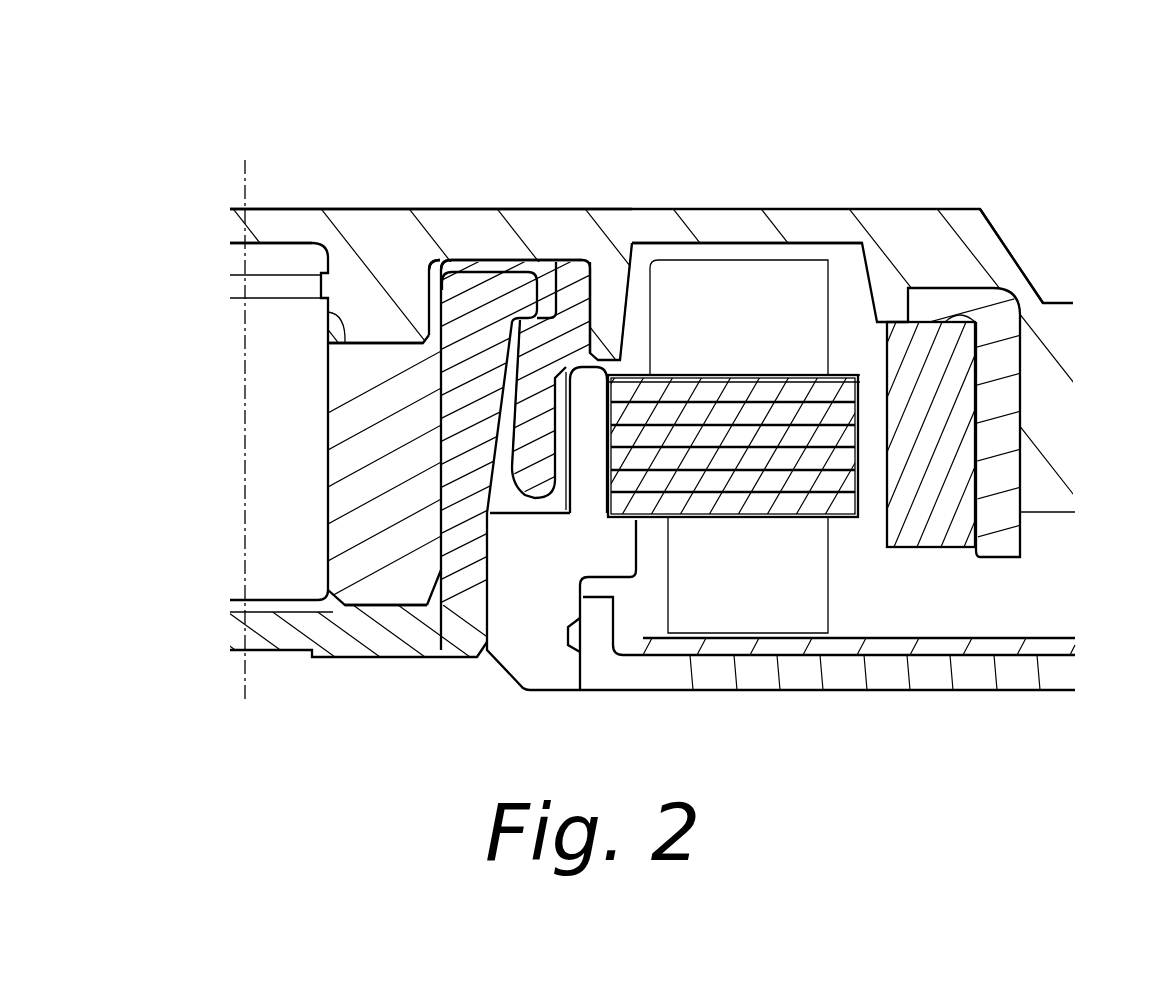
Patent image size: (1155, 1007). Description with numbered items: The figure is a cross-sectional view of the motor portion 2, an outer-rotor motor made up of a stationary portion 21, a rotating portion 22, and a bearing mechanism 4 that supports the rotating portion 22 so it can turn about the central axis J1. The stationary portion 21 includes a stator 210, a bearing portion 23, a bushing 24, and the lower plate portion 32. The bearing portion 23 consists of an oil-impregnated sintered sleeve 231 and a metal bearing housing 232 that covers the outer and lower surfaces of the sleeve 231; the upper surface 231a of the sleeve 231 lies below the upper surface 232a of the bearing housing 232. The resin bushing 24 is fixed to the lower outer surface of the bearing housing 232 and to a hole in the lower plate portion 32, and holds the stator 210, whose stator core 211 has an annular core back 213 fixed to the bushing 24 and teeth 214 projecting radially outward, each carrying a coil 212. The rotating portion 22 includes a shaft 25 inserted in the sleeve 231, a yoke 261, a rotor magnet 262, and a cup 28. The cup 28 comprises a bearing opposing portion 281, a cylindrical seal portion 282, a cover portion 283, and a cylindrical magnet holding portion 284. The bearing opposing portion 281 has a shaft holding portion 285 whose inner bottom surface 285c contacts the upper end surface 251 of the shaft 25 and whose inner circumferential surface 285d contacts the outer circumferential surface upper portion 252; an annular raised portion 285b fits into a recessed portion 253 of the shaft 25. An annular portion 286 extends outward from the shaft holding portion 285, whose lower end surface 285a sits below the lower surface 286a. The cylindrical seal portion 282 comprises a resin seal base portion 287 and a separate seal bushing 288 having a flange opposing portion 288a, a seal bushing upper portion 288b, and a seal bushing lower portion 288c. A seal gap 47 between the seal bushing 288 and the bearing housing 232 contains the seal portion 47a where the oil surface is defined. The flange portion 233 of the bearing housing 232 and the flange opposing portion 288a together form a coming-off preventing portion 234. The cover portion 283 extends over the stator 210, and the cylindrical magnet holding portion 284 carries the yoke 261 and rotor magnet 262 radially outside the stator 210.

The motor portion 2 is at (296, 118).
The cup 28 is at (418, 106).
The central axis J1 is at (243, 185).
The upper end surface 251 is at (268, 240).
The inner bottom surface 285c is at (322, 285).
The recessed portion 253 is at (322, 297).
The inner circumferential surface 285d is at (330, 318).
The outer circumferential surface upper portion 252 is at (340, 350).
The lower end surface 285a is at (430, 360).
The lower surface 286a is at (447, 395).
The seal portion 47a is at (455, 428).
The seal gap 47 is at (447, 470).
The shaft 25 is at (280, 585).
The sleeve 231 is at (405, 573).
The upper surface 231a is at (400, 298).
The raised portion 285b is at (372, 342).
The shaft holding portion 285 is at (400, 290).
The annular portion 286 is at (471, 262).
The bearing opposing portion 281 is at (485, 128).
The bearing housing 232 is at (465, 573).
The upper surface 232a is at (494, 264).
The flange portion 233 is at (540, 320).
The coming-off preventing portion 234 is at (590, 107).
The seal bushing 288 is at (612, 138).
The flange opposing portion 288a is at (590, 300).
The seal bushing upper portion 288b is at (627, 340).
The seal bushing lower portion 288c is at (535, 440).
The seal base portion 287 is at (635, 305).
The cylindrical seal portion 282 is at (703, 117).
The cover portion 283 is at (751, 234).
The cylindrical magnet holding portion 284 is at (1048, 343).
The rotating portion 22 is at (1000, 170).
The yoke 261 is at (1000, 397).
The rotor magnet 262 is at (930, 433).
The core back 213 is at (630, 528).
The teeth 214 is at (767, 505).
The coils 212 is at (783, 593).
The stator core 211 is at (706, 740).
The stator 210 is at (800, 752).
The bushing 24 is at (550, 592).
The lower plate portion 32 is at (972, 673).
The stationary portion 21 is at (915, 732).
The bearing mechanism 4 is at (315, 745).
The bearing portion 23 is at (400, 745).